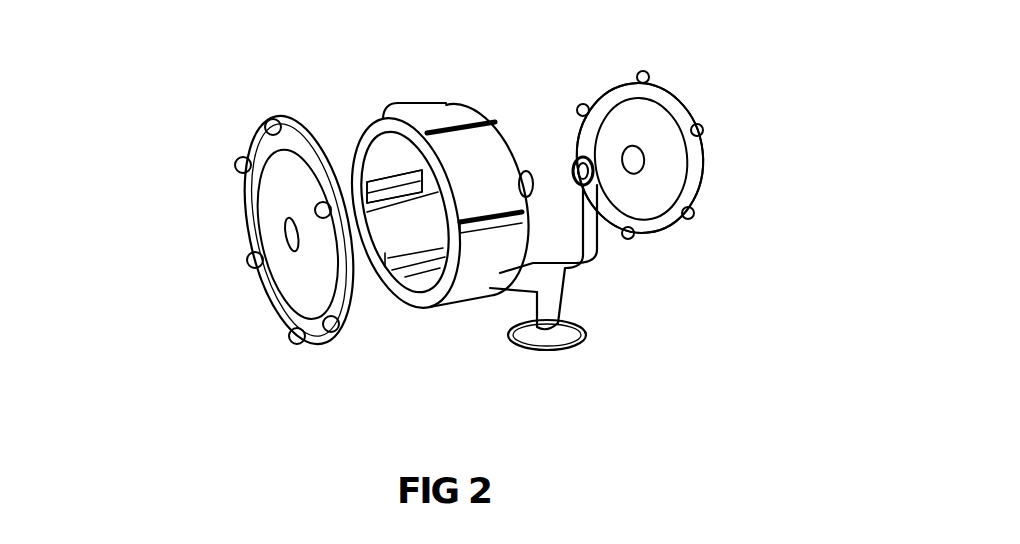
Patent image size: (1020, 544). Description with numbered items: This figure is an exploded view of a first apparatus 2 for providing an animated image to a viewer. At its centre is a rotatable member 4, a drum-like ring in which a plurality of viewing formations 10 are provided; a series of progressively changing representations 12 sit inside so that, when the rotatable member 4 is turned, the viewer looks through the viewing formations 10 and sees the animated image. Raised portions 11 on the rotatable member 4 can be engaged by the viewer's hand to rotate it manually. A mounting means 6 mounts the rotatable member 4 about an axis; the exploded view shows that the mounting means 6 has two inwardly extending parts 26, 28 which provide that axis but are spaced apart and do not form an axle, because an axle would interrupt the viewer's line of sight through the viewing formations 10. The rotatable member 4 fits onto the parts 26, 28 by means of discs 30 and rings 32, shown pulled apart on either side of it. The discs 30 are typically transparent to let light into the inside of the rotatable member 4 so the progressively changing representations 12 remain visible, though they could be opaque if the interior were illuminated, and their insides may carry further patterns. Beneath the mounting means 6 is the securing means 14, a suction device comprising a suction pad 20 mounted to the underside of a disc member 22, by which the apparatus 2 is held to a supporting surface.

The first apparatus 2 is at (162, 54).
The rotatable member 4 is at (495, 145).
The mounting means 6 is at (600, 230).
The viewing formations 10 is at (460, 92).
The raised portions 11 is at (705, 128).
The progressively changing representations 12 is at (370, 160).
The securing means 14 is at (620, 341).
The suction pad 20 is at (570, 347).
The disc member 22 is at (538, 338).
The inwardly extending part 26 is at (526, 172).
The inwardly extending part 28 is at (575, 155).
The discs 30 is at (292, 285).
The rings 32 is at (307, 342).